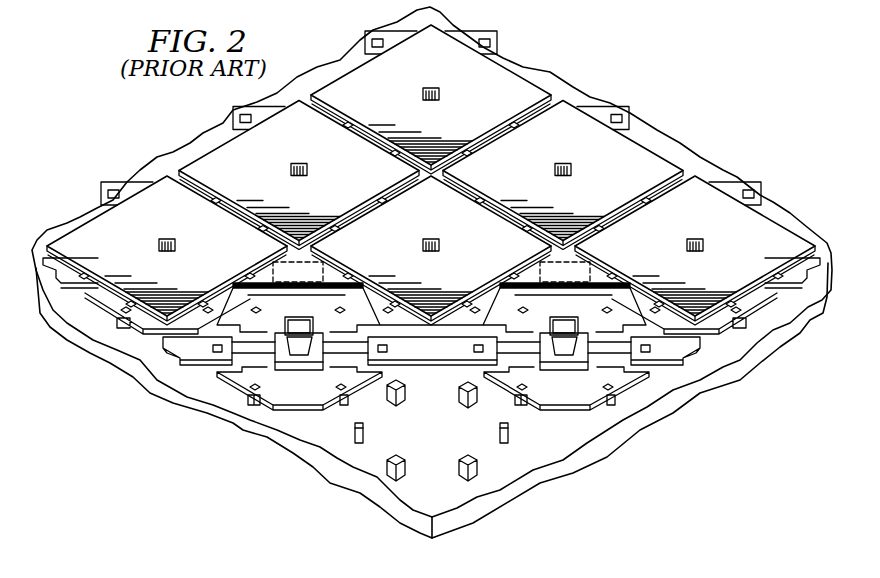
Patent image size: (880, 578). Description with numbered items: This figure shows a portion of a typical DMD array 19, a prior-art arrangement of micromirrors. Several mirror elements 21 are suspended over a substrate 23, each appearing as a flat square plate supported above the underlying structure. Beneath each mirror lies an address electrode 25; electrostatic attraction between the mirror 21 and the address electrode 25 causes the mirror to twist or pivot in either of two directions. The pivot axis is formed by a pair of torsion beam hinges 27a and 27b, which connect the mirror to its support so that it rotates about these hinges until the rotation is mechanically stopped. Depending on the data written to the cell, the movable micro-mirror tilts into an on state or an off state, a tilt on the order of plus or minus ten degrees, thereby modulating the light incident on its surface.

The DMD array 19 is at (624, 77).
The mirror element 21 is at (431, 175).
The substrate 23 is at (620, 435).
The address electrode 25 is at (280, 303).
The torsion beam hinge 27a is at (253, 348).
The torsion beam hinge 27b is at (350, 347).